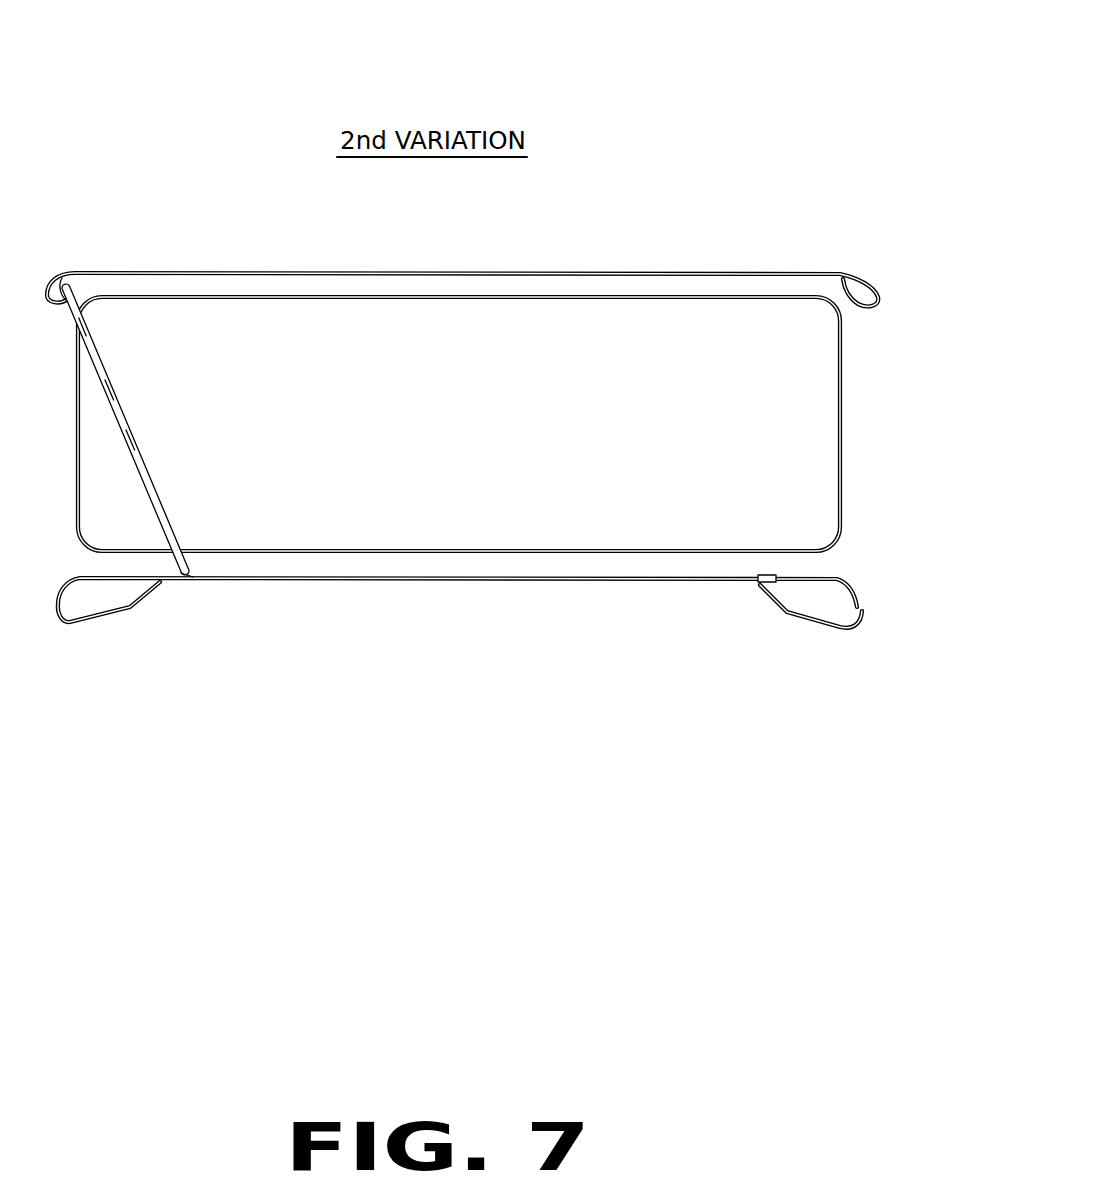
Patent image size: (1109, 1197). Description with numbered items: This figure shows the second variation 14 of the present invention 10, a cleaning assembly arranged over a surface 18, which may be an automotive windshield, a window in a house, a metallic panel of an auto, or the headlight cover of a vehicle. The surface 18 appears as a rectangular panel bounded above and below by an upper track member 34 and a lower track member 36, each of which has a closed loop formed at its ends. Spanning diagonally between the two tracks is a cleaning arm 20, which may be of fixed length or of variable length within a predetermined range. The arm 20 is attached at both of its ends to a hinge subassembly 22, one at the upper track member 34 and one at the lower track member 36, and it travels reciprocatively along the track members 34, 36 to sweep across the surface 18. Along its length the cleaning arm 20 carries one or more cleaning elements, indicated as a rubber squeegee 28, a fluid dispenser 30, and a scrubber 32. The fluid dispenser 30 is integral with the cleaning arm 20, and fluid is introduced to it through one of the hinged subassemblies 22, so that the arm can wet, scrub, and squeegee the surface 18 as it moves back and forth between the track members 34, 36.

The present invention 10 is at (470, 339).
The second variation 14 is at (470, 392).
The surface 18 is at (241, 321).
The cleaning arm 20 is at (172, 429).
The hinge subassembly 22 is at (63, 280).
The rubber squeegee 28 is at (147, 460).
The fluid dispenser 30 is at (125, 410).
The scrubber 32 is at (95, 343).
The upper track member 34 is at (609, 273).
The lower track member 36 is at (760, 588).